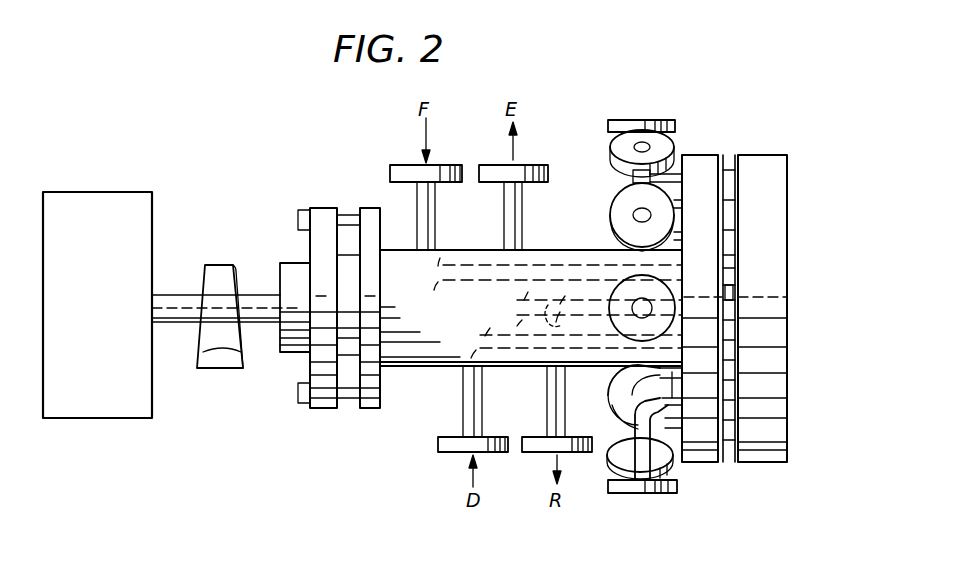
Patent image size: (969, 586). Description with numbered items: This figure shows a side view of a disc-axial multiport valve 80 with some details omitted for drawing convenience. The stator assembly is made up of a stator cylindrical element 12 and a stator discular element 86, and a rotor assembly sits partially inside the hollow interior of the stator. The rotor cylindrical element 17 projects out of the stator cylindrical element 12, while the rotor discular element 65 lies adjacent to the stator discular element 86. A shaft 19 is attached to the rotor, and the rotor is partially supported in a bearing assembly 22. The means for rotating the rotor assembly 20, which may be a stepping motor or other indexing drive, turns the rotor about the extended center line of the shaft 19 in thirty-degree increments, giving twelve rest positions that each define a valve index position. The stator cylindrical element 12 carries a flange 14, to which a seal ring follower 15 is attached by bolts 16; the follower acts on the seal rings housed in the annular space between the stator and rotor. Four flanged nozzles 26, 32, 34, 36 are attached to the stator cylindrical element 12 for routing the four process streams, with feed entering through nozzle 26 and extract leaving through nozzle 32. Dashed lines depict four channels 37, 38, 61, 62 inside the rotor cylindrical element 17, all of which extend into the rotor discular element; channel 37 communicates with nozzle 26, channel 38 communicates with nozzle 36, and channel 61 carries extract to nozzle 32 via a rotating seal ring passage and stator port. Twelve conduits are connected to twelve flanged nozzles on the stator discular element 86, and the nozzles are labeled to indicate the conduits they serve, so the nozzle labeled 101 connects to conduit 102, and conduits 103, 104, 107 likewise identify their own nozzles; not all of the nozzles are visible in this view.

The stator cylindrical element 12 is at (446, 366).
The flange 14 is at (370, 208).
The seal ring follower 15 is at (320, 208).
The bolts 16 is at (355, 398).
The rotor cylindrical element 17 is at (285, 263).
The shaft 19 is at (177, 295).
The means for rotating the rotor assembly 20 is at (126, 192).
The bearing assembly 22 is at (232, 368).
The nozzle 26 is at (433, 232).
The nozzle 32 is at (524, 215).
The nozzle 34 is at (565, 405).
The nozzle 36 is at (482, 406).
The channel 37 is at (450, 273).
The channel 38 is at (480, 345).
The channel 61 is at (525, 305).
The channel 62 is at (548, 318).
The rotor discular element 65 is at (759, 155).
The valve 80 is at (787, 297).
The stator discular element 86 is at (691, 155).
The nozzle (for conduit 102) 101 is at (633, 120).
The conduit 102 is at (610, 148).
The conduit 103 is at (610, 212).
The conduit 104 is at (642, 308).
The conduit 107 is at (648, 493).